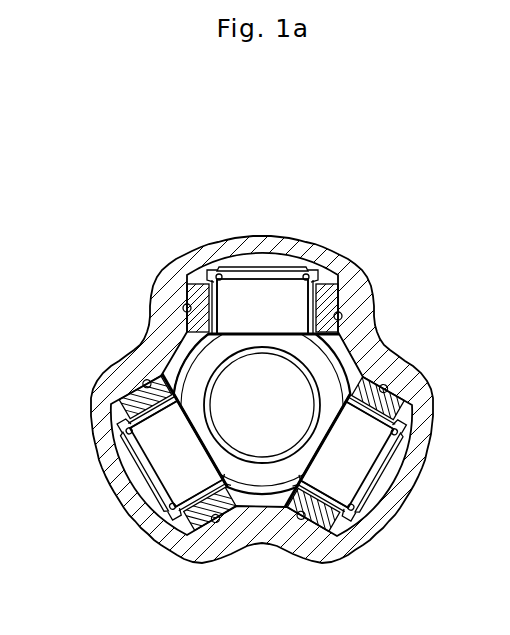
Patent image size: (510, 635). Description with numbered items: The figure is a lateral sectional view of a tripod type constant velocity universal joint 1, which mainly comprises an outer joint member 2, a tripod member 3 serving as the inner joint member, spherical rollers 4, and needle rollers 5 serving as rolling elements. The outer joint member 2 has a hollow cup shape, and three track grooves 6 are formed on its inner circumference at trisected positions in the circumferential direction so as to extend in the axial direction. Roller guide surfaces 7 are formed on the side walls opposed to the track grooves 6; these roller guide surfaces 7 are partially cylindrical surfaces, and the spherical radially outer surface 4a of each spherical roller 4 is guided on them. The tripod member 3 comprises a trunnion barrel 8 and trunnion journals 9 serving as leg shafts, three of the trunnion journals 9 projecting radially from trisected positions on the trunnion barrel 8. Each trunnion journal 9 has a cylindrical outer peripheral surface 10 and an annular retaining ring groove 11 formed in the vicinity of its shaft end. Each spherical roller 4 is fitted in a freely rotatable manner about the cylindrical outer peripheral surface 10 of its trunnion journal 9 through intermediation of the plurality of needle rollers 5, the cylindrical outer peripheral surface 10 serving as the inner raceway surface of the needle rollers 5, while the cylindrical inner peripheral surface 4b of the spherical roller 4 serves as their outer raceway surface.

The tripod type constant velocity universal joint 1 is at (234, 210).
The outer joint member 2 is at (165, 260).
The tripod member 3 is at (260, 500).
The spherical roller 4 is at (318, 300).
The spherical radially outer surface 4a is at (296, 520).
The inner peripheral surface 4b is at (215, 538).
The needle rollers 5 is at (320, 282).
The track grooves 6 is at (212, 272).
The roller guide surfaces 7 is at (186, 300).
The trunnion barrel 8 is at (176, 374).
The trunnion journals 9 is at (261, 292).
The cylindrical outer peripheral surface 10 is at (207, 268).
The annular retaining ring groove 11 is at (300, 272).